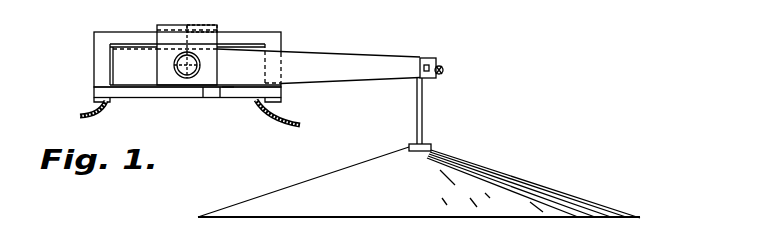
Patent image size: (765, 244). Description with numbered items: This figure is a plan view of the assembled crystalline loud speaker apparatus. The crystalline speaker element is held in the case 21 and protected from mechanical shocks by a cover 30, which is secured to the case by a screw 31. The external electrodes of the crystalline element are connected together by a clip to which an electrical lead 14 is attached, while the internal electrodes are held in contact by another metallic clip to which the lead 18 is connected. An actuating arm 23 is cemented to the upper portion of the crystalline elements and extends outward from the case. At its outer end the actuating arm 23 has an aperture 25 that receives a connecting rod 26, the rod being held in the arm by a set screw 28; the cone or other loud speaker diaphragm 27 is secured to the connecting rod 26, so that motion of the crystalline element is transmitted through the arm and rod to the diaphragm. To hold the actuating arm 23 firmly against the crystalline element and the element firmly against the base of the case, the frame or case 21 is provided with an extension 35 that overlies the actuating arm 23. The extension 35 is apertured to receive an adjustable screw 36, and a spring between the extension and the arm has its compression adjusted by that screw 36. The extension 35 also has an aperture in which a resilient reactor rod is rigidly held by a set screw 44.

The case 21 is at (95, 62).
The electrical lead 14 is at (80, 116).
The lead 18 is at (292, 121).
The extension 35 is at (162, 57).
The set screw 44 is at (212, 26).
The adjustable screw 36 is at (197, 75).
The screw 31 is at (190, 97).
The cover 30 is at (228, 90).
The actuating arm 23 is at (347, 62).
The aperture 25 is at (422, 58).
The set screw 28 is at (441, 72).
The connecting rod 26 is at (423, 130).
The loud speaker diaphragm 27 is at (543, 195).